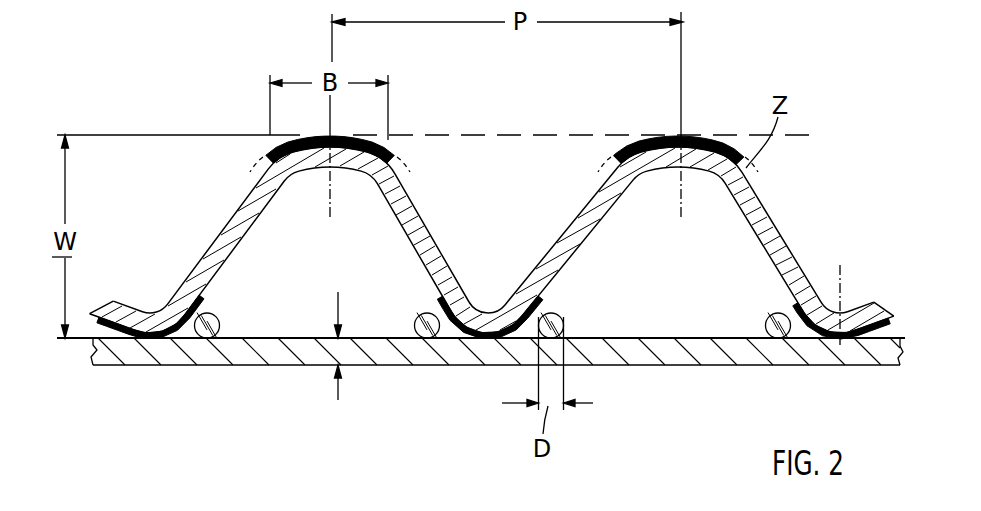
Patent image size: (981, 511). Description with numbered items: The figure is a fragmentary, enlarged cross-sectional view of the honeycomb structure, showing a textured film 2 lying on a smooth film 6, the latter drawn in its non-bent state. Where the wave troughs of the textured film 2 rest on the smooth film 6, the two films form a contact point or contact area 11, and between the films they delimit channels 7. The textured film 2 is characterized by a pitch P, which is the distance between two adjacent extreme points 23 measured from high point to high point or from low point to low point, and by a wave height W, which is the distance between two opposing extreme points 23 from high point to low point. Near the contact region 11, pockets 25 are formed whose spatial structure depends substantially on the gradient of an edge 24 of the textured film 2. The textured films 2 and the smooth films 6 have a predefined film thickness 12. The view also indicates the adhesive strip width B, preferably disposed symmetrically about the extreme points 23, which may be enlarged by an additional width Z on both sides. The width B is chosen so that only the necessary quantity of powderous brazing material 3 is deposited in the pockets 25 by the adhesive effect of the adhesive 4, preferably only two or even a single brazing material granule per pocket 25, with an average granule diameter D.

The textured film 2 is at (492, 240).
The powderous brazing material 3 is at (768, 355).
The adhesive 4 is at (797, 333).
The smooth film 6 is at (497, 381).
The channel 7 is at (735, 277).
The contact point 11 is at (143, 340).
The film thickness 12 is at (328, 355).
The extreme point 23 is at (330, 150).
The edge of the textured film 24 is at (757, 193).
The pocket 25 is at (442, 338).